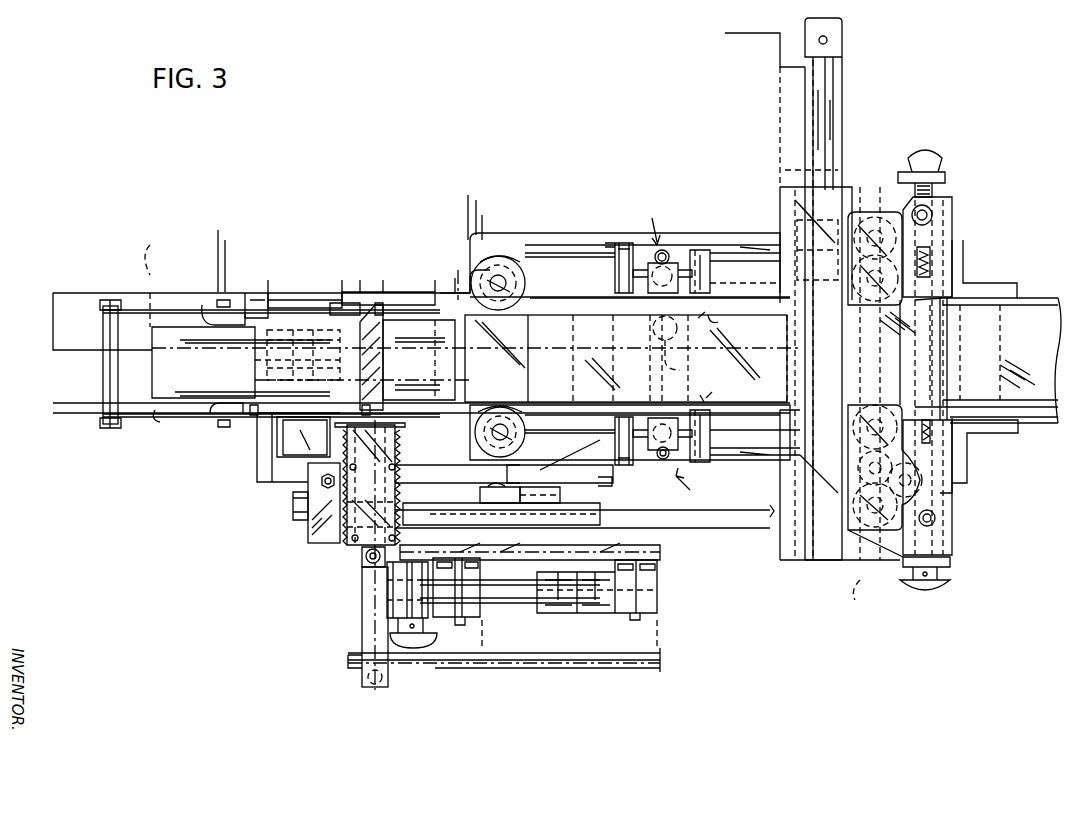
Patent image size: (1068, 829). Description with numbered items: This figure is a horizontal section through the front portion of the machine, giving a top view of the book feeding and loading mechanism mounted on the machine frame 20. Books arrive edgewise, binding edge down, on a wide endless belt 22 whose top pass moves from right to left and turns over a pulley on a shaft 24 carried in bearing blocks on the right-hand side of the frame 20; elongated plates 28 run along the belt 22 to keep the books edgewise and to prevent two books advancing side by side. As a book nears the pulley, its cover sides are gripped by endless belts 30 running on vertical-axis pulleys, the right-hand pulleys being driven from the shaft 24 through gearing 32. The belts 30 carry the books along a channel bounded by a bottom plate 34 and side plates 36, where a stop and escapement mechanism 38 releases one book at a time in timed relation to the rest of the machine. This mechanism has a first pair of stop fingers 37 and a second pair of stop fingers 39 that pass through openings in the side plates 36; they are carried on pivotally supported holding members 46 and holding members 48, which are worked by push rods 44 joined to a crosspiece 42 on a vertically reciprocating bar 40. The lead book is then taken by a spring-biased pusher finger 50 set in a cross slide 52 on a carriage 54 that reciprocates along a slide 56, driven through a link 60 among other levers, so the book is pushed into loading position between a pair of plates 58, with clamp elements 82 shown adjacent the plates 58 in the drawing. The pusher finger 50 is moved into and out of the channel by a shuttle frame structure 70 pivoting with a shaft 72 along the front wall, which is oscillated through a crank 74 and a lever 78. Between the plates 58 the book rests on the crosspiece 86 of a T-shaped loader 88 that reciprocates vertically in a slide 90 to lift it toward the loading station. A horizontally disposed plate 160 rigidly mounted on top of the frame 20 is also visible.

The machine frame 20 is at (56, 322).
The endless belt 22 is at (1037, 350).
The shaft 24 is at (845, 102).
The elongated plates 28 is at (1025, 290).
The endless belts 30 is at (528, 258).
The gearing 32 is at (868, 575).
The bottom plate 34 is at (455, 290).
The side plates 36 is at (565, 293).
The first pair of stop fingers 37 is at (712, 318).
The stop and escapement mechanism 38 is at (679, 345).
The second pair of stop fingers 39 is at (615, 345).
The bar 40 is at (683, 345).
The crosspiece 42 is at (660, 360).
The push rods 44 is at (662, 250).
The holding members 46 is at (710, 250).
The holding members 48 is at (620, 243).
The pusher finger 50 is at (378, 305).
The cross slide 52 is at (355, 520).
The carriage 54 is at (308, 487).
The slide 56 is at (298, 518).
The plates 58 is at (140, 305).
The link 60 is at (576, 470).
The shuttle frame structure 70 is at (660, 558).
The shaft 72 is at (505, 595).
The crank 74 is at (562, 613).
The lever 78 is at (722, 528).
The clamp 82 is at (203, 300).
The crosspiece 86 is at (192, 374).
The T-shaped carriage or loader 88 is at (295, 293).
The slide 90 is at (255, 293).
The plate 160 is at (150, 293).